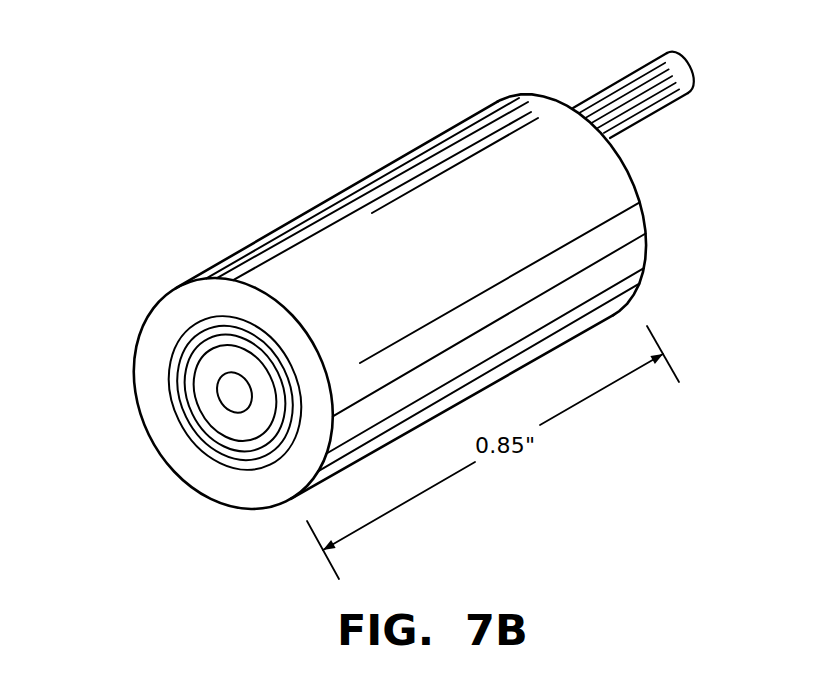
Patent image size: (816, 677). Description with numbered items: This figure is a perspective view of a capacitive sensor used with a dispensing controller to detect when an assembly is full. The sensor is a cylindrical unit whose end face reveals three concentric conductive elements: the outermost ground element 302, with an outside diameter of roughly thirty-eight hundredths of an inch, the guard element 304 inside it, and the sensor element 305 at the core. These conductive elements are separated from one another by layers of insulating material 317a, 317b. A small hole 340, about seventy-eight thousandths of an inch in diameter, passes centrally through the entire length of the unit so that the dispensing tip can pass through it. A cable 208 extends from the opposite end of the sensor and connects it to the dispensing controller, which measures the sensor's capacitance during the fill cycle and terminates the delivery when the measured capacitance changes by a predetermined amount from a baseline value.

The ground element 302 is at (173, 307).
The insulating material layer 317a is at (170, 350).
The insulating material layer 317b is at (187, 377).
The guard element 304 is at (188, 407).
The sensor element 305 is at (255, 435).
The hole 340 is at (236, 401).
The cable 208 is at (693, 67).